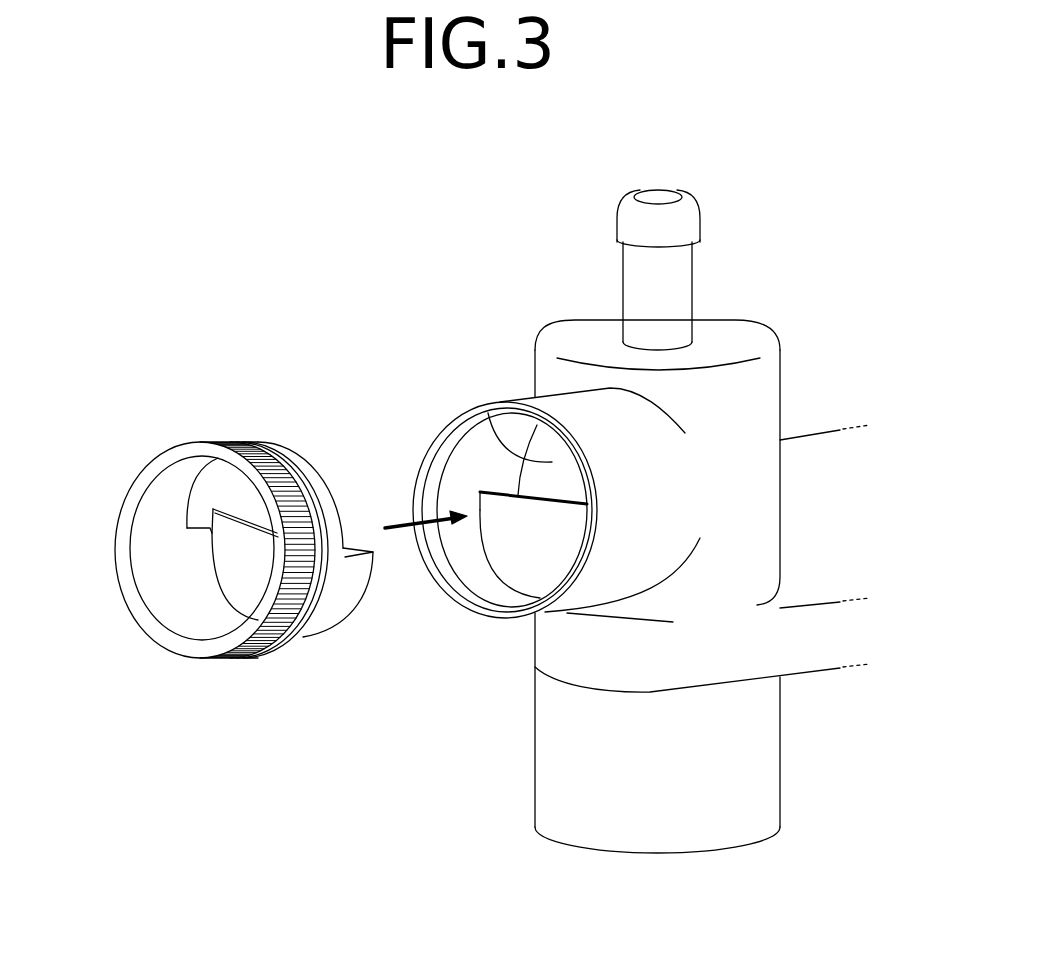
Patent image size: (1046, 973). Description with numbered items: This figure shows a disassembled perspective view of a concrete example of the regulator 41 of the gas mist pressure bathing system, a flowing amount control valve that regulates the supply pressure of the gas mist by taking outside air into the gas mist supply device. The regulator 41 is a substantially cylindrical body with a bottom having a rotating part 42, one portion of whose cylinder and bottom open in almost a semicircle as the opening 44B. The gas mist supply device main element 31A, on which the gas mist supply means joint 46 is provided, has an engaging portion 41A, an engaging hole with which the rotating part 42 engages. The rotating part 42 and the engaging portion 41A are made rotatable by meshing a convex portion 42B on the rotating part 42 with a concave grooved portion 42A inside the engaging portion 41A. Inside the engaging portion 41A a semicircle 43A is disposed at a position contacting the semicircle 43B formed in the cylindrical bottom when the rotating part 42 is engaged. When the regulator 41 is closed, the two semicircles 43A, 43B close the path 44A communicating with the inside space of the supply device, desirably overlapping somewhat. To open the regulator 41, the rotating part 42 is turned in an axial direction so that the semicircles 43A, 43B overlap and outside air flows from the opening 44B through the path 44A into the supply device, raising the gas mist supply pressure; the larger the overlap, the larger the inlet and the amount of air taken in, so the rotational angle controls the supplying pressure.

The gas mist supply device main element 31A is at (553, 380).
The regulator 41 is at (318, 360).
The engaging portion 41A is at (469, 515).
The rotating part 42 is at (211, 559).
The concave grooved portion 42A is at (440, 470).
The convex portion 42B is at (300, 623).
The semicircle 43A is at (527, 547).
The semicircle 43B is at (233, 558).
The path 44A is at (488, 420).
The opening 44B is at (243, 500).
The gas mist supply means joint 46 is at (687, 212).